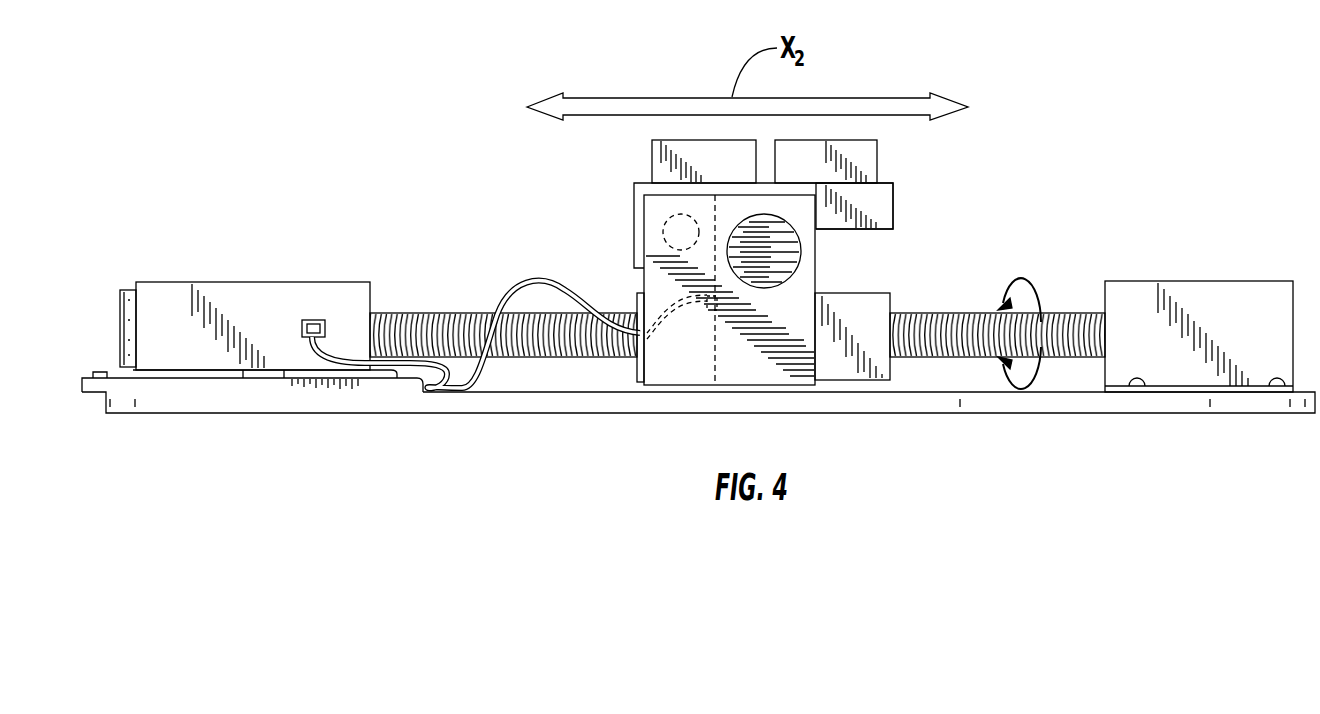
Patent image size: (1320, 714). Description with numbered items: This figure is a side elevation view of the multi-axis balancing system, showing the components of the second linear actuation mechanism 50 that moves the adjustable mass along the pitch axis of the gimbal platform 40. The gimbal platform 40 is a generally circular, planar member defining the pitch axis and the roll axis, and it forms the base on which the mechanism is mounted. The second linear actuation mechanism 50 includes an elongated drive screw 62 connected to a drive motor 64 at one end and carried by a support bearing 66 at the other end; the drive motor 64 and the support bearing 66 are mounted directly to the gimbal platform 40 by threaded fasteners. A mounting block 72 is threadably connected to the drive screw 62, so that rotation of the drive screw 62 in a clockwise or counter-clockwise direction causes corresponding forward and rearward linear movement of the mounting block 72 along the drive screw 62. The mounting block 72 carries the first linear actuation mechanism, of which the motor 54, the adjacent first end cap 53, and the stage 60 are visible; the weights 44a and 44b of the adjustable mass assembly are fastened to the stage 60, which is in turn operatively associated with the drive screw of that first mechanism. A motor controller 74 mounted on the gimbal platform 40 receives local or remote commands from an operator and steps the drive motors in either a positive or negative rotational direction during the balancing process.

The gimbal platform 40 is at (1002, 405).
The weight 44a is at (665, 166).
The weight 44b is at (865, 165).
The second linear actuation mechanism 50 is at (400, 284).
The first end cap 53 is at (660, 208).
The motor 54 is at (762, 372).
The stage 60 is at (885, 205).
The drive screw 62 is at (948, 315).
The drive motor 64 is at (258, 292).
The support bearing 66 is at (1232, 290).
The mounting block 72 is at (637, 368).
The motor controller 74 is at (228, 383).